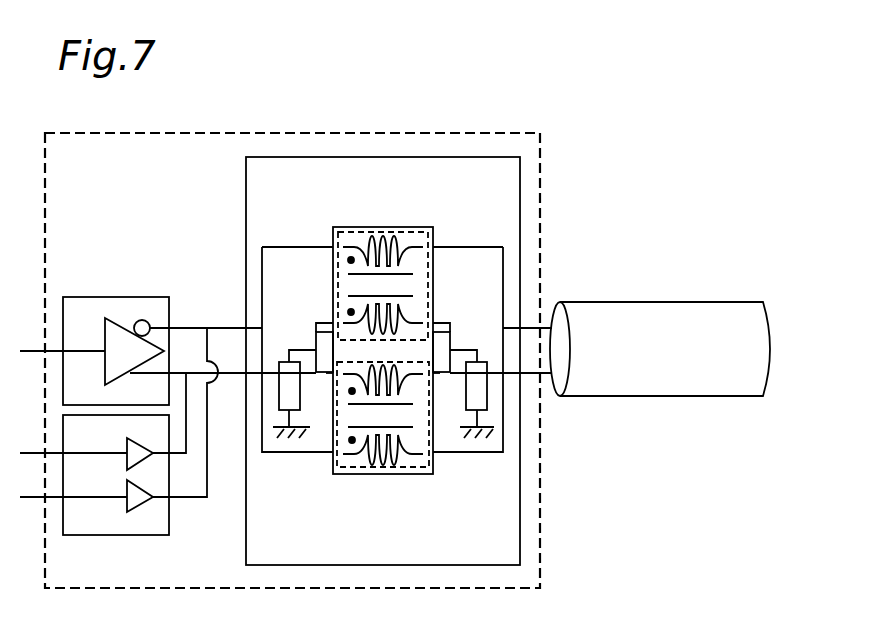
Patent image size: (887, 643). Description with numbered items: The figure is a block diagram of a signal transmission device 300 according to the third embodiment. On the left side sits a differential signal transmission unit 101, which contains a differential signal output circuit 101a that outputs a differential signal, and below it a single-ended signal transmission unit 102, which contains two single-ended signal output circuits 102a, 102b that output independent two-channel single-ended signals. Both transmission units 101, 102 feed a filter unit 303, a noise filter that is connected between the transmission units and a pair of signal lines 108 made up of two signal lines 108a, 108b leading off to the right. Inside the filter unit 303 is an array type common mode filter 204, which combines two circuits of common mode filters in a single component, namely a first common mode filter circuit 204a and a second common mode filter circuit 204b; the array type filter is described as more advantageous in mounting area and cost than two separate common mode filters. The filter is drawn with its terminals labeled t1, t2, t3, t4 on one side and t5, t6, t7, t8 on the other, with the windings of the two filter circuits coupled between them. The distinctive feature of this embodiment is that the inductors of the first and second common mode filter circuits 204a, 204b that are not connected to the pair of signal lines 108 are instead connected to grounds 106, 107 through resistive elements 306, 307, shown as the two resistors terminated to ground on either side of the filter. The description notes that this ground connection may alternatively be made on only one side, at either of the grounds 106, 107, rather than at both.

The signal transmission device 300 is at (472, 130).
The filter unit 303 is at (230, 216).
The differential signal transmission unit 101 is at (146, 290).
The differential signal output circuit 101a is at (118, 325).
The single-ended signal transmission unit 102 is at (179, 521).
The single-ended signal output circuit 102a is at (141, 443).
The single-ended signal output circuit 102b is at (141, 506).
The array type common mode filter 204 is at (324, 231).
The first common mode filter circuit 204a is at (387, 472).
The second common mode filter circuit 204b is at (403, 228).
The resistive element 306 is at (282, 350).
The resistive element 307 is at (483, 355).
The ground 106 is at (297, 440).
The ground 107 is at (482, 440).
The pair of signal lines 108 is at (723, 397).
The signal line 108a is at (544, 373).
The signal line 108b is at (544, 328).
The terminal t1 is at (446, 439).
The terminal t2 is at (446, 386).
The terminal t3 is at (446, 317).
The terminal t4 is at (446, 262).
The terminal t5 is at (320, 262).
The terminal t6 is at (320, 317).
The terminal t7 is at (320, 386).
The terminal t8 is at (320, 439).